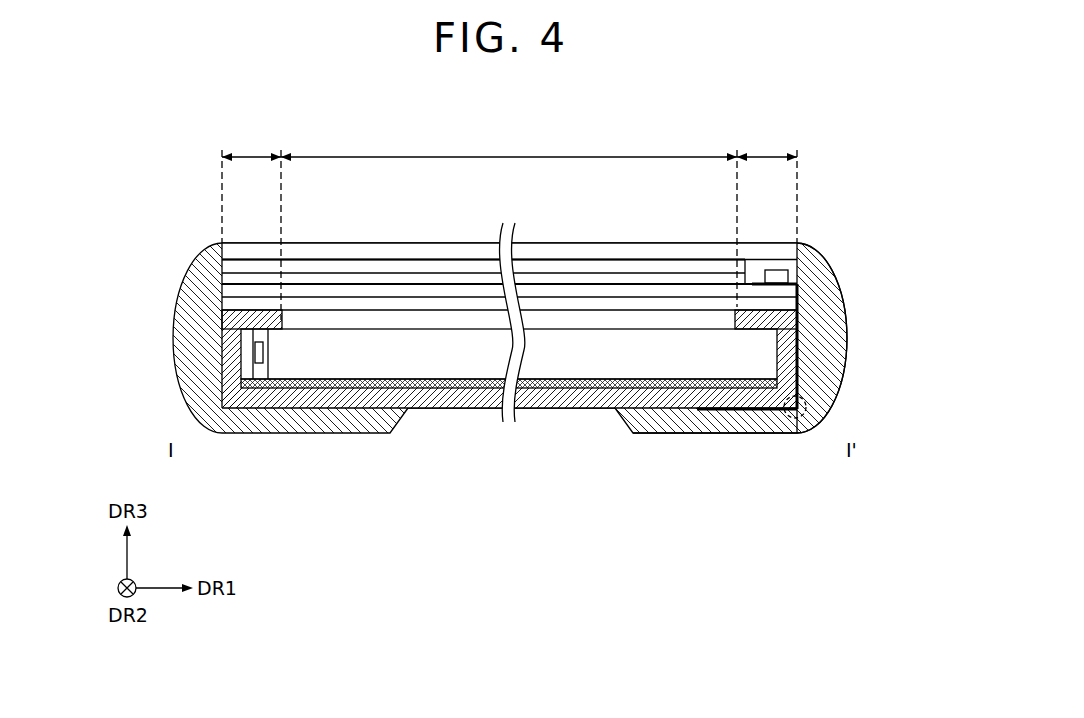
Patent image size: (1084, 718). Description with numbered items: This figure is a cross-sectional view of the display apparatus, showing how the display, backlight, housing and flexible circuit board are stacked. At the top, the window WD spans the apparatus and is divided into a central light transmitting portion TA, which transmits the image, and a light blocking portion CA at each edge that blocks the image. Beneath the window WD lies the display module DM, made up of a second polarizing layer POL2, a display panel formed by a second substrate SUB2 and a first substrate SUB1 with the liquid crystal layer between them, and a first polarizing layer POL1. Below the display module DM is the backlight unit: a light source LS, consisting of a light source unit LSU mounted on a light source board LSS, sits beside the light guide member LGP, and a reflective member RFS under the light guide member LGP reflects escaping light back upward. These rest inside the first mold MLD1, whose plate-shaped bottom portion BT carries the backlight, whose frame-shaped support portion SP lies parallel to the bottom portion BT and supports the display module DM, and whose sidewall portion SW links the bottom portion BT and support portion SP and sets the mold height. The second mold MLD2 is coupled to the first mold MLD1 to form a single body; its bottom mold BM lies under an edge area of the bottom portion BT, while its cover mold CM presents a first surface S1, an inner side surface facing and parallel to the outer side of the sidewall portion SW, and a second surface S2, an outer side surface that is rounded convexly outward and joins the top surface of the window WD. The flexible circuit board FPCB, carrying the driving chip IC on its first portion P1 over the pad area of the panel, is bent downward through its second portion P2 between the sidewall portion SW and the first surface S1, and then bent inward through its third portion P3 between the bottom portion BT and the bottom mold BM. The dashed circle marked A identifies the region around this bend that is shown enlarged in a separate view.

The window WD is at (575, 252).
The second polarizing layer POL2 is at (235, 266).
The second substrate SUB2 is at (235, 279).
The first substrate SUB1 is at (235, 291).
The first polarizing layer POL1 is at (235, 304).
The display module DM is at (419, 254).
The light source board LSS is at (250, 349).
The light source unit LSU is at (253, 355).
The light source LS is at (164, 363).
The light guide member LGP is at (480, 360).
The reflective member RFS is at (422, 383).
The first mold MLD1 is at (595, 338).
The support portion SP is at (758, 322).
The sidewall portion SW is at (790, 348).
The bottom portion BT is at (767, 367).
The second mold MLD2 is at (510, 395).
The bottom mold BM is at (748, 420).
The cover mold CM is at (835, 413).
The flexible circuit board FPCB is at (803, 341).
The first portion P1 is at (757, 282).
The second portion P2 is at (843, 296).
The third portion P3 is at (715, 412).
The driving chip IC is at (777, 268).
The first surface S1 is at (783, 256).
The second surface S2 is at (830, 263).
The portion 'A' A is at (815, 393).
The light blocking portion CA is at (509, 225).
The light transmitting portion TA is at (509, 145).